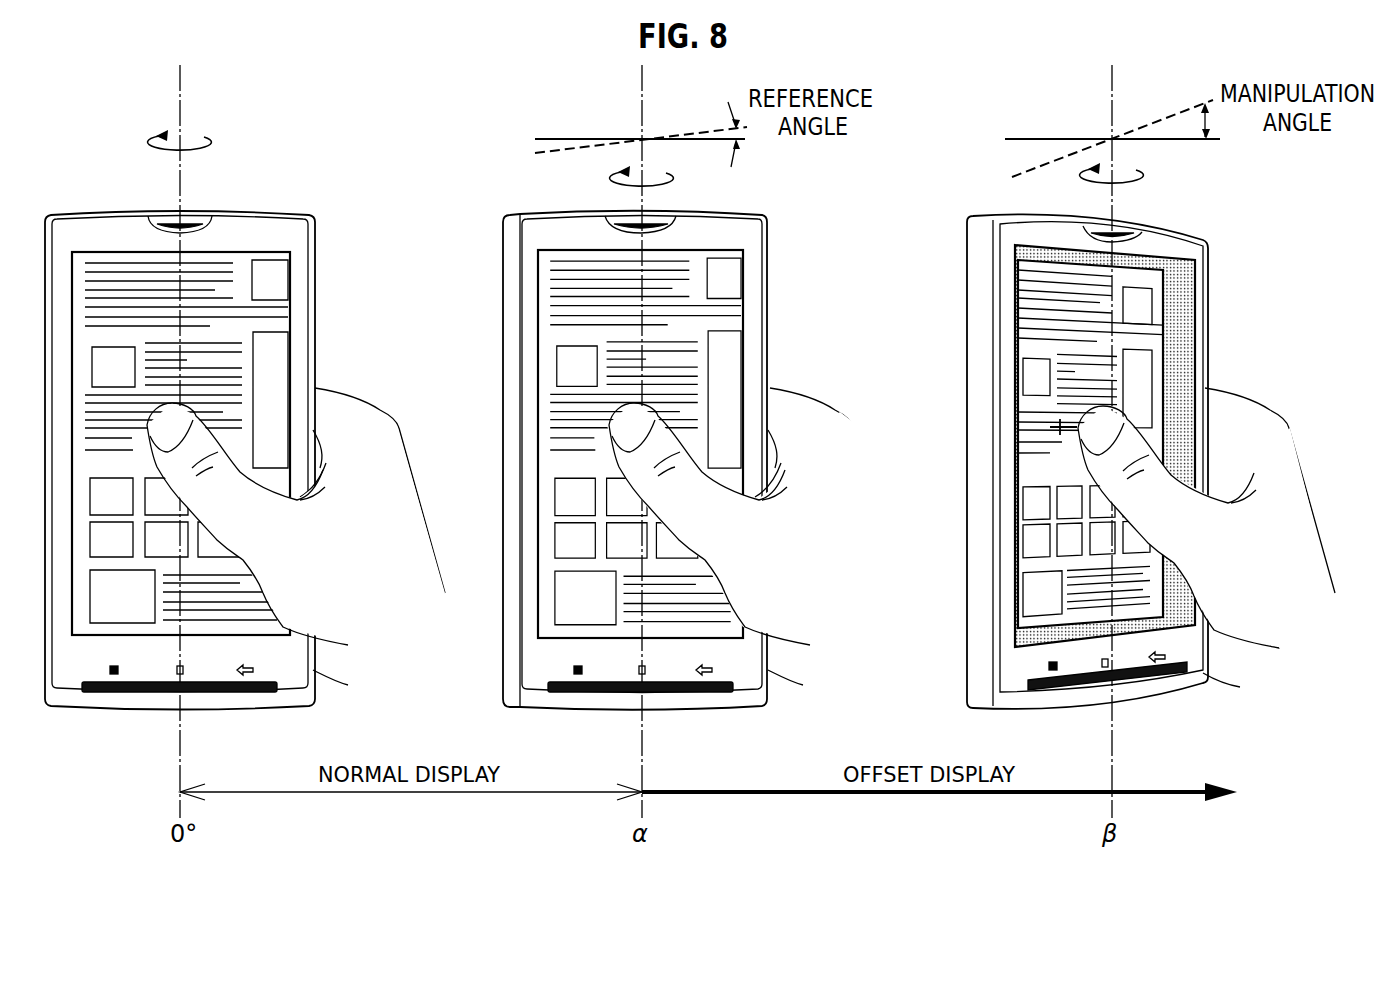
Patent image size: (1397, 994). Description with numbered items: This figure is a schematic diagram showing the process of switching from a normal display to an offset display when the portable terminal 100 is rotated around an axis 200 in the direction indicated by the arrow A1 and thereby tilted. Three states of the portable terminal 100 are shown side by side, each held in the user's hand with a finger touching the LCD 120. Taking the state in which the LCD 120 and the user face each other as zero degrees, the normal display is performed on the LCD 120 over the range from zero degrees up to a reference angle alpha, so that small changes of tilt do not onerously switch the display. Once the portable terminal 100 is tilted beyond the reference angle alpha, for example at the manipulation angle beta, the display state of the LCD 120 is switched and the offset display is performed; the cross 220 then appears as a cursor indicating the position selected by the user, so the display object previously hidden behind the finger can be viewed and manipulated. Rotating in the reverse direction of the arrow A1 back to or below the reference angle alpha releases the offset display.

The portable terminal 100 is at (668, 415).
The LCD 120 is at (107, 300).
The axis 200 is at (182, 98).
The cross 220 is at (1057, 427).
The arrow A1 is at (213, 143).